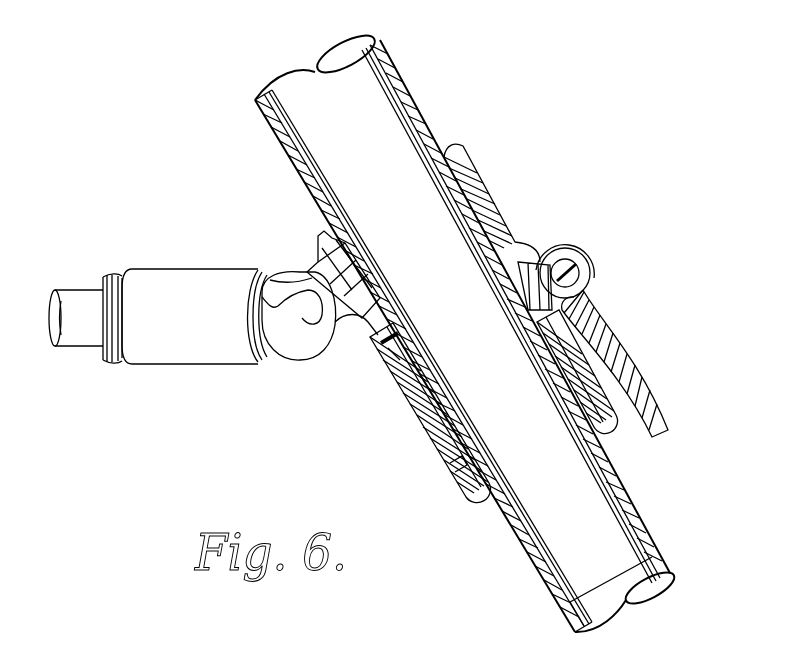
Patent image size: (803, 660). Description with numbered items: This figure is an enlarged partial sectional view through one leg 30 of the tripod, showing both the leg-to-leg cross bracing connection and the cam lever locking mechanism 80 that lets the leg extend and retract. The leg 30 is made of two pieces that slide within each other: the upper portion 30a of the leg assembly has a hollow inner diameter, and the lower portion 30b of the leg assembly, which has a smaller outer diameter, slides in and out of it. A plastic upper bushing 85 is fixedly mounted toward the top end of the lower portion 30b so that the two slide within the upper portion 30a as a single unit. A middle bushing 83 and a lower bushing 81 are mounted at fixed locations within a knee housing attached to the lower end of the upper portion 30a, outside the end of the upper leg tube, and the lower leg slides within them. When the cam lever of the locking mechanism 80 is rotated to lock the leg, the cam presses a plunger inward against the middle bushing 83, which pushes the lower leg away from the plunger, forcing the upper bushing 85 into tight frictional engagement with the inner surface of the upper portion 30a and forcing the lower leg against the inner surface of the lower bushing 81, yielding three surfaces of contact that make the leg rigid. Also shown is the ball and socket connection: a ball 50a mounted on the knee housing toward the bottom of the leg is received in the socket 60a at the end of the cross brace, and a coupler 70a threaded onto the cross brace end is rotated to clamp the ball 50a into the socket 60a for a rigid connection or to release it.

The leg 30 is at (400, 78).
The upper portion of the leg assembly 30a is at (637, 504).
The lower portion of the leg assembly 30b is at (437, 120).
The upper bushing 85 is at (258, 104).
The cam lever locking mechanism 80 is at (590, 283).
The lower bushing 81 is at (457, 478).
The middle bushing 83 is at (390, 363).
The ball 50a is at (290, 296).
The coupler 70a is at (167, 282).
The socket 60a is at (190, 355).